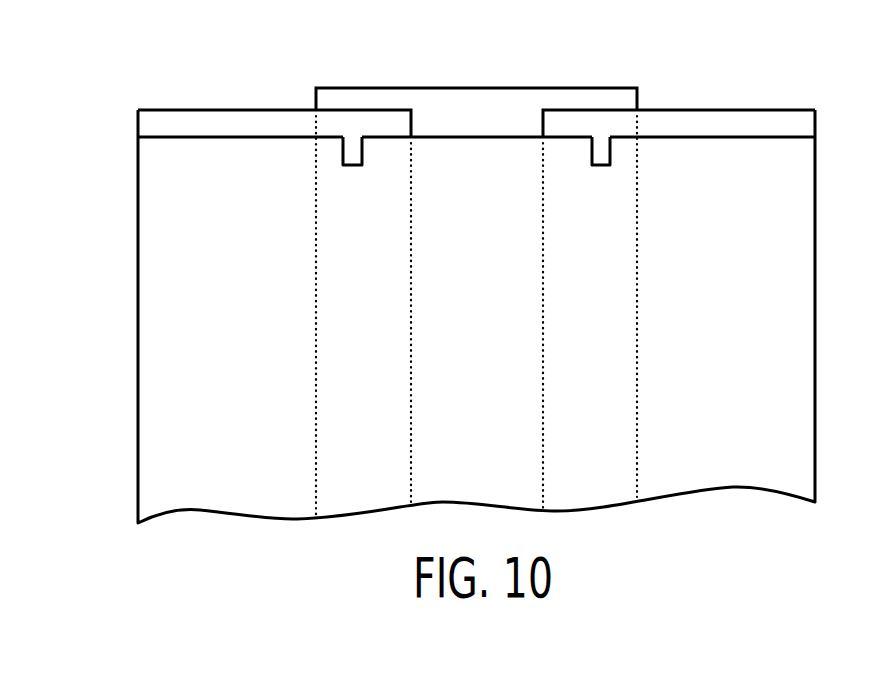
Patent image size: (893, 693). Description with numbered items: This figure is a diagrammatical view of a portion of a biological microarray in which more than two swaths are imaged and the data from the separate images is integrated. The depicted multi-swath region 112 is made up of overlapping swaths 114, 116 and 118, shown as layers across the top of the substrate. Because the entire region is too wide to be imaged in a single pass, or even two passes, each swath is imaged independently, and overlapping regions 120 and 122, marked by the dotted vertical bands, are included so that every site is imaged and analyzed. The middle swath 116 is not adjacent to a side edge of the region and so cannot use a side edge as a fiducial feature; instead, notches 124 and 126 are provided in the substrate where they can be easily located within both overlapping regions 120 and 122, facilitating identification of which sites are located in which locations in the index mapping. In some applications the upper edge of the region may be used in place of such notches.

The multi-swath region 112 is at (113, 337).
The overlapping swath 114 is at (725, 110).
The middle swath 116 is at (477, 88).
The overlapping swath 118 is at (240, 110).
The overlapping region 120 is at (607, 333).
The overlapping region 122 is at (382, 333).
The notch 124 is at (602, 147).
The notch 126 is at (350, 147).